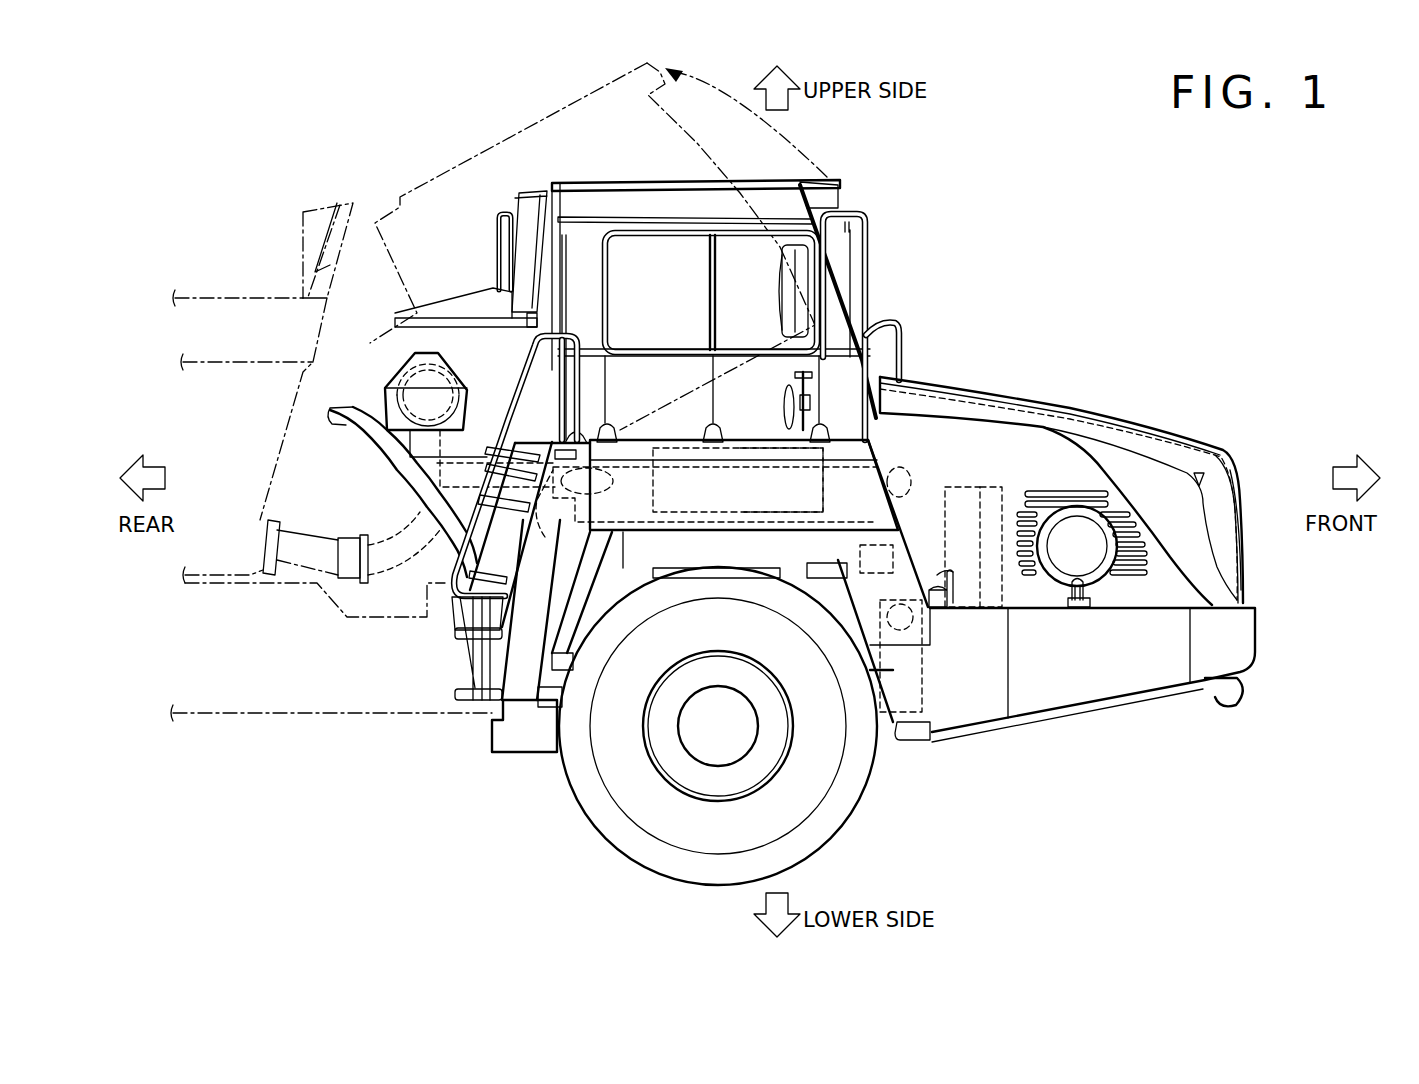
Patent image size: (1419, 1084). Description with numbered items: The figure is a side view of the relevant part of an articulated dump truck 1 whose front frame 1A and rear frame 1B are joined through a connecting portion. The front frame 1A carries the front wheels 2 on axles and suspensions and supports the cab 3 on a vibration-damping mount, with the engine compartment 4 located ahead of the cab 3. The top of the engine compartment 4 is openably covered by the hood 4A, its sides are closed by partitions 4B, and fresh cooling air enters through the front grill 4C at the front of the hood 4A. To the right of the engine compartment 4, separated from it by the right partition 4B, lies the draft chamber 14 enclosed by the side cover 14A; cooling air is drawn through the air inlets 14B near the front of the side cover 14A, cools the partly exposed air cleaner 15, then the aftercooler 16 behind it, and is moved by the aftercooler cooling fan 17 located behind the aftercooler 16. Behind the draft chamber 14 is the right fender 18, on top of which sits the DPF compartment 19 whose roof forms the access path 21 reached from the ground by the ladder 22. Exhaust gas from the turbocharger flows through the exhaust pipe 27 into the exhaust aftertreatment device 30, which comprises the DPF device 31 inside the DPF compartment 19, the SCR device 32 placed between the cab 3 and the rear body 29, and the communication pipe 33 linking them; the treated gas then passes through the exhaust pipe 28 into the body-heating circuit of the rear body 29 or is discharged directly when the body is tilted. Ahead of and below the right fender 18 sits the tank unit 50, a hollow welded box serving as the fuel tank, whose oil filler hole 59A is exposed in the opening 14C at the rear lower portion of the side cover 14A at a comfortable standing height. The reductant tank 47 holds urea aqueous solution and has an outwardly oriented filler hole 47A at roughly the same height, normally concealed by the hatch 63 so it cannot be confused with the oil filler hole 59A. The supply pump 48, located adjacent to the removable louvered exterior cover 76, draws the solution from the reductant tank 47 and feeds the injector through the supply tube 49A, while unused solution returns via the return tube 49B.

The dump truck 1 is at (1008, 182).
The front frame 1A is at (527, 742).
The rear frame 1B is at (238, 712).
The front wheels 2 is at (838, 815).
The cab 3 is at (762, 200).
The engine compartment 4 is at (1117, 433).
The hood 4A is at (1155, 435).
The partitions 4B is at (1200, 430).
The front grill 4C is at (1243, 487).
The draft chamber 14 is at (1058, 462).
The side cover 14A is at (1012, 435).
The air inlets 14B is at (1146, 557).
The opening 14C is at (953, 580).
The air cleaner 15 is at (1072, 555).
The aftercooler 16 is at (985, 487).
The aftercooler cooling fan 17 is at (960, 485).
The right fender 18 is at (703, 484).
The DPF compartment 19 is at (757, 470).
The access path 21 is at (657, 440).
The ladder 22 is at (447, 603).
The exhaust pipe 27 is at (888, 465).
The exhaust pipe 28 is at (307, 540).
The rear body 29 is at (252, 300).
The exhaust aftertreatment device 30 is at (568, 522).
The DPF device 31 is at (775, 505).
The SCR device 32 is at (455, 362).
The communication pipe 33 is at (540, 517).
The reductant tank 47 is at (915, 742).
The filler hole 47A is at (913, 638).
The supply pump 48 is at (905, 550).
The supply tube 49A is at (632, 532).
The return tube 49B is at (771, 507).
The tank unit 50 is at (1053, 685).
The oil filler hole 59A is at (942, 596).
The hatch 63 is at (905, 640).
The exterior cover 76 is at (895, 548).